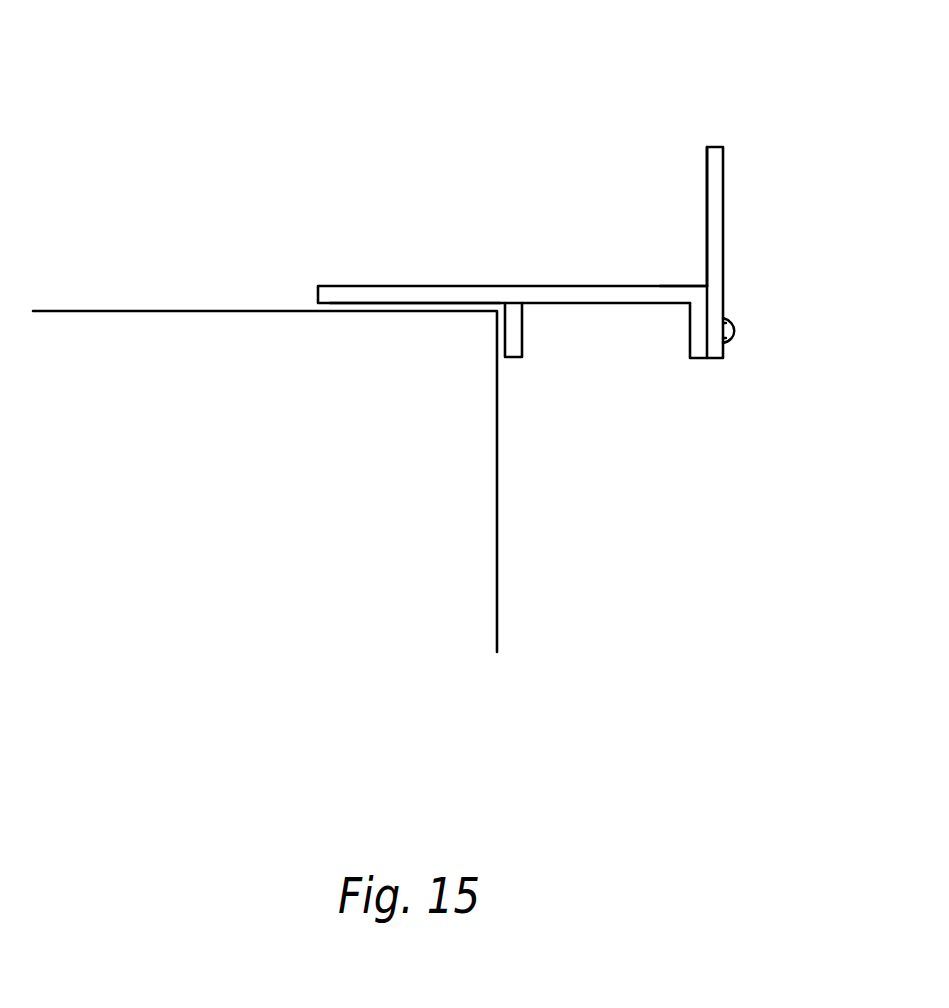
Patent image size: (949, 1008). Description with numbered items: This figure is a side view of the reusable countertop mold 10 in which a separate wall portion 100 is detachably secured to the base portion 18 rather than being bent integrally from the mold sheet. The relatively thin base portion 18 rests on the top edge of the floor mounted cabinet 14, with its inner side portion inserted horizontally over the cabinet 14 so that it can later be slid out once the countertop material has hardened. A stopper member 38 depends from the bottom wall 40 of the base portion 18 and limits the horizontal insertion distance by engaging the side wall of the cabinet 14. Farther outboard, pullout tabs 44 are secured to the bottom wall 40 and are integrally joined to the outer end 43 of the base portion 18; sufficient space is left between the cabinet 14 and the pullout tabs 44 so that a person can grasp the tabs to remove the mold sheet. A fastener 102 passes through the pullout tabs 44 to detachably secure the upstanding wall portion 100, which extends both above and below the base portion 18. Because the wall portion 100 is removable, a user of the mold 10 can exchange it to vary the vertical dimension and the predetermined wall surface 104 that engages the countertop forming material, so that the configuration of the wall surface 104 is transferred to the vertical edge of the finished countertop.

The reusable countertop mold 10 is at (636, 10).
The floor mounted cabinet 14 is at (497, 547).
The base portion 18 is at (395, 170).
The stopper member 38 is at (513, 343).
The bottom wall 40 is at (420, 304).
The outer end 43 is at (698, 287).
The pullout tabs 44 is at (697, 330).
The wall portion 100 is at (718, 297).
The fastener 102 is at (736, 330).
The wall surface 104 is at (707, 192).